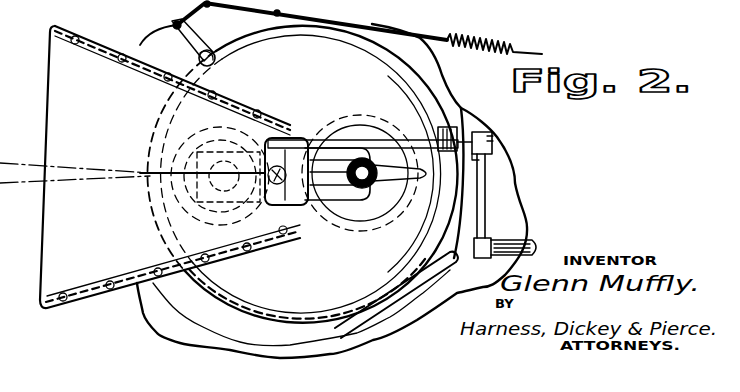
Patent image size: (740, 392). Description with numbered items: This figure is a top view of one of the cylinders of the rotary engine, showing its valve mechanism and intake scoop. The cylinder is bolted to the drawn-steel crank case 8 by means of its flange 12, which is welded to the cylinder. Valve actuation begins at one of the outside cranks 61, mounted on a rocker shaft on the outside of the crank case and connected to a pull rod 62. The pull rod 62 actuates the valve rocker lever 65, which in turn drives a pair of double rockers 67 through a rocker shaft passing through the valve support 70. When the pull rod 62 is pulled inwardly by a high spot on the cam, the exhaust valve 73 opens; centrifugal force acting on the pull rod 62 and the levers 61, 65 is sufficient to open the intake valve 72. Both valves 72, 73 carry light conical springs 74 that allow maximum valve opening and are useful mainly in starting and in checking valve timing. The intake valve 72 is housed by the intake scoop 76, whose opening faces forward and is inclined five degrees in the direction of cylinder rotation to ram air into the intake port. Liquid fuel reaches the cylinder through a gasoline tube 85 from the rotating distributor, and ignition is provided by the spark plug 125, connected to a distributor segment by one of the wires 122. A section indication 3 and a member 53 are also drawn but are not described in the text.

The lever rod 3 is at (338, 9).
The spark plug 125 is at (175, 27).
The wires 122 is at (440, 42).
The intake scoop 76 is at (120, 120).
The gasoline tube 85 is at (142, 204).
The intake valve 72 is at (243, 256).
The double rockers 67 is at (313, 132).
The valve rocker lever 65 is at (331, 128).
The springs 74 is at (366, 143).
The exhaust valve 73 is at (352, 214).
The valve support 70 is at (390, 212).
The pull rod 62 is at (479, 124).
The crank case 8 is at (502, 155).
The outside crank 61 is at (486, 183).
The handle bar 53 is at (530, 243).
The flange 12 is at (404, 302).